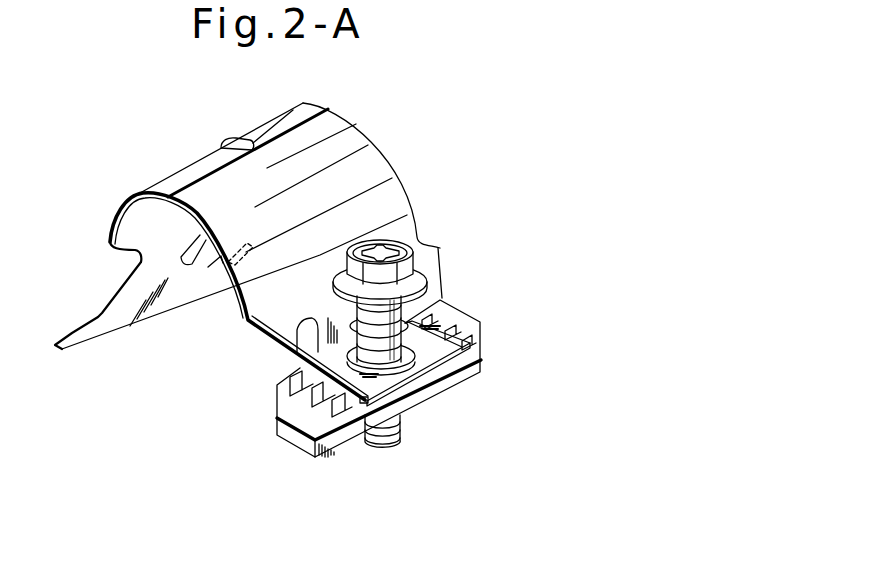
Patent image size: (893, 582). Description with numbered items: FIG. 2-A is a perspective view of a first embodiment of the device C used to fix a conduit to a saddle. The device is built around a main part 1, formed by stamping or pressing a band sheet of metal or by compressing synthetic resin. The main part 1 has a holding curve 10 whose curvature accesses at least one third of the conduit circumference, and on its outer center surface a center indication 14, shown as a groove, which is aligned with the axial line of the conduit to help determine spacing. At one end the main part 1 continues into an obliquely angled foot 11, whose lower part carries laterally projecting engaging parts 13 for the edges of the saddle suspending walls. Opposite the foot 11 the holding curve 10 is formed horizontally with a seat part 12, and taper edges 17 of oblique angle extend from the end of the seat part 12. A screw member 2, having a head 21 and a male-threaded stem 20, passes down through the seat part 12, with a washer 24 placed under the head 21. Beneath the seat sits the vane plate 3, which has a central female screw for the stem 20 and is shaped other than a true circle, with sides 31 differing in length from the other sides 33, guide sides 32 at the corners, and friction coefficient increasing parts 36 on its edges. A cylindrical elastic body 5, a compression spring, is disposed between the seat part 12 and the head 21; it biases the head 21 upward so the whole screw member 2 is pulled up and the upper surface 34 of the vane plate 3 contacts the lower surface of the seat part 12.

The device C is at (194, 153).
The main part 1 is at (356, 142).
The holding curve 10 is at (373, 163).
The center indication 14 is at (314, 113).
The foot 11 is at (133, 274).
The engaging parts 13 is at (86, 322).
The taper edges 17 is at (270, 340).
The screw member 2 is at (456, 315).
The head 21 is at (424, 266).
The washer 24 is at (428, 292).
The stem 20 is at (393, 444).
The vane plate 3 is at (330, 440).
The seat part 12 is at (458, 318).
The sides 31 is at (463, 312).
The guide sides 32 is at (483, 343).
The other sides 33 is at (293, 374).
The upper surface 34 is at (277, 404).
The friction coefficient increasing parts 36 is at (344, 412).
The cylindrical elastic body 5 is at (447, 389).